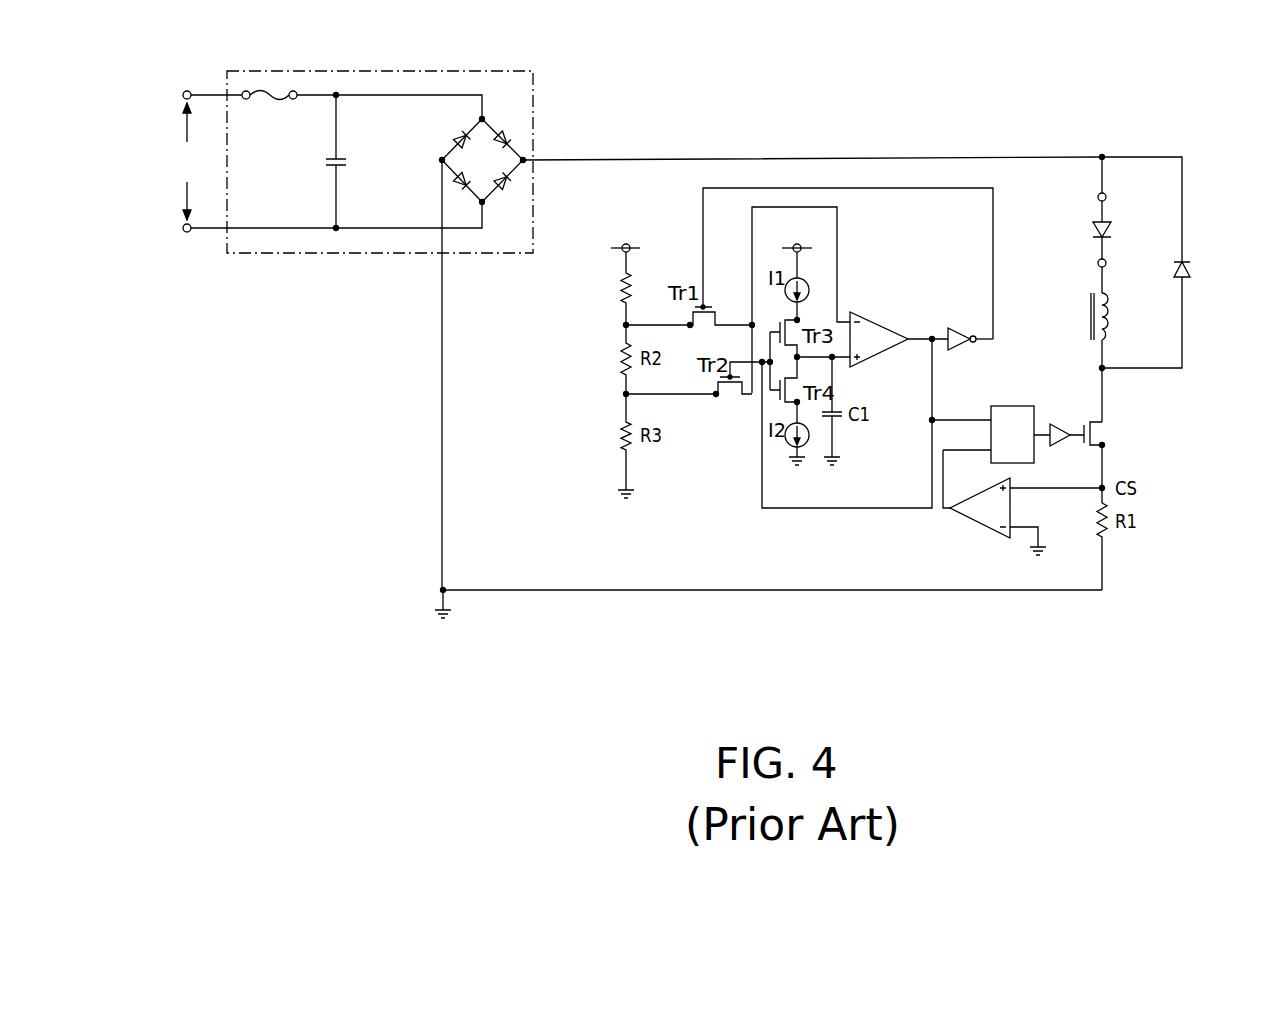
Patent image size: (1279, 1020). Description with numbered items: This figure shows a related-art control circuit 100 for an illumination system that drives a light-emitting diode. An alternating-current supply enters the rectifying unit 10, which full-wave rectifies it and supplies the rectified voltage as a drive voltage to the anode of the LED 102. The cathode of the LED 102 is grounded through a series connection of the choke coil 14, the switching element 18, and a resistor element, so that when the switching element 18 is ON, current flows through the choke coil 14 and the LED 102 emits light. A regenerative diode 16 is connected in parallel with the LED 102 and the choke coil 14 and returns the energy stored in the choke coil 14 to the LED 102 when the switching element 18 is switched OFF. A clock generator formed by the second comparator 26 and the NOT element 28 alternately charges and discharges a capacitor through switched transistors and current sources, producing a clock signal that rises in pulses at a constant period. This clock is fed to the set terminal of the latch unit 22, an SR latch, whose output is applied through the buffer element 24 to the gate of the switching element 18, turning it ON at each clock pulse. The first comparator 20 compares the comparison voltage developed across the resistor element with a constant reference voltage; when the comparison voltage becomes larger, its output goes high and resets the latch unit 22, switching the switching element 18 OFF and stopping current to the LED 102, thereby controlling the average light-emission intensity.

The rectifying unit 10 is at (299, 254).
The control circuit 100 is at (710, 673).
The LED 102 is at (1113, 232).
The choke coil 14 is at (1112, 320).
The regenerative diode 16 is at (1195, 272).
The switching element 18 is at (1112, 437).
The first comparator 20 is at (973, 522).
The latch unit 22 is at (1030, 400).
The buffer element 24 is at (1064, 422).
The second comparator 26 is at (878, 318).
The NOT element 28 is at (972, 312).